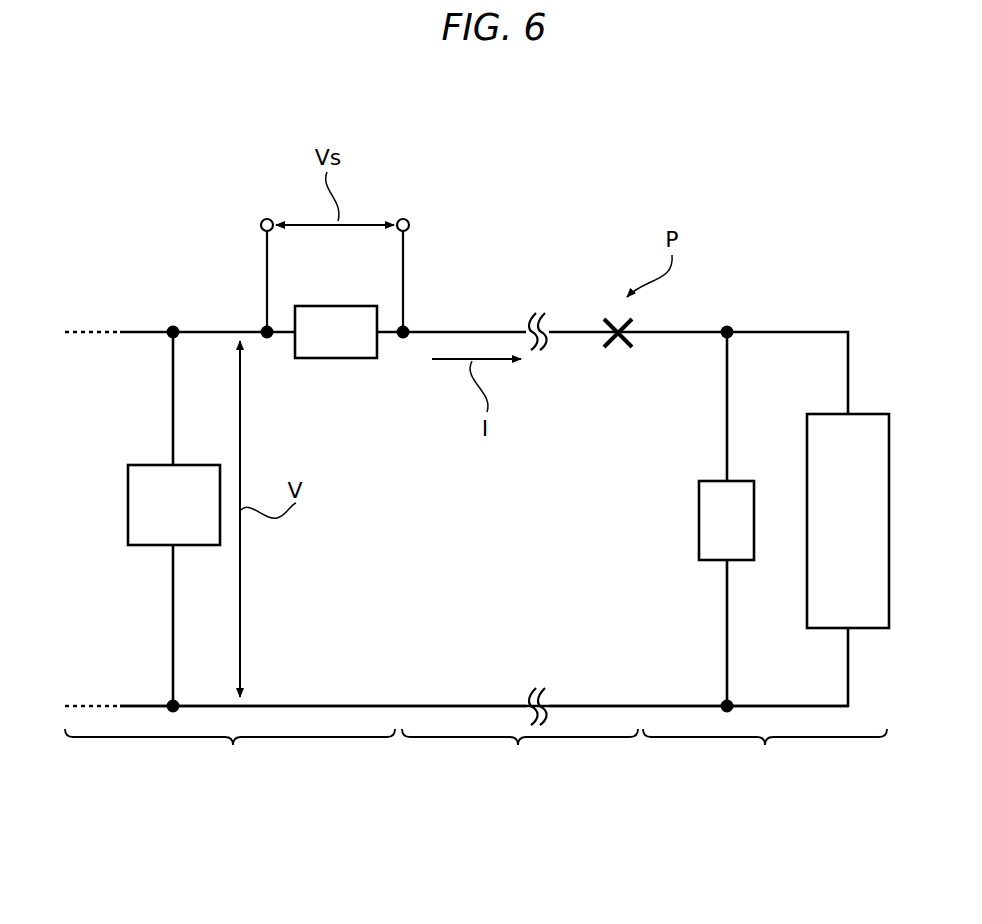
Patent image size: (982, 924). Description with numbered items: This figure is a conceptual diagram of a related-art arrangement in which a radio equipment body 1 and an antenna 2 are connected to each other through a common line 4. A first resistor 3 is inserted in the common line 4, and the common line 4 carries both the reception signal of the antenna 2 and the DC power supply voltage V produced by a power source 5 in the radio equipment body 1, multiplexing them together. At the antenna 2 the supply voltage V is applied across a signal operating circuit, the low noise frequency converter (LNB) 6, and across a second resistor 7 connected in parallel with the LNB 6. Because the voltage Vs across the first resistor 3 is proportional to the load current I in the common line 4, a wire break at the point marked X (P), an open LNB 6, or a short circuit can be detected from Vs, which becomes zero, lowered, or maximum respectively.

The radio equipment body 1 is at (230, 760).
The antenna 2 is at (765, 760).
The first resistor 3 is at (335, 359).
The common line 4 is at (520, 760).
The power source 5 is at (128, 511).
The low noise frequency converter (LNB) 6 is at (862, 413).
The second resistor 7 is at (699, 518).